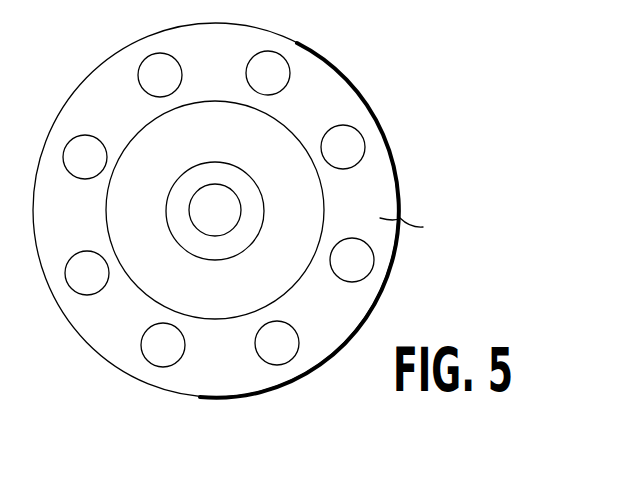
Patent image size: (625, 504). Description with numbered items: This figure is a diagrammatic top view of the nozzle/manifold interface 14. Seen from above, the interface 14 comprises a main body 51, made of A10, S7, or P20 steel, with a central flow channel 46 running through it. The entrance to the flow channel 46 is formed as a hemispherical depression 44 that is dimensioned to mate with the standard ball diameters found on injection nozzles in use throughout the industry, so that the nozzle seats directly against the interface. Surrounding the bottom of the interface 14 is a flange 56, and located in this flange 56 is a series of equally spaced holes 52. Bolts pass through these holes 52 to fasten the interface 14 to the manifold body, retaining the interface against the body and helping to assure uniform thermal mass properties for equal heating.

The nozzle/manifold interface 14 is at (398, 183).
The hemispherical depression 44 is at (223, 247).
The central flow channel 46 is at (233, 198).
The main body 51 is at (280, 117).
The holes 52 is at (286, 64).
The flange 56 is at (420, 224).